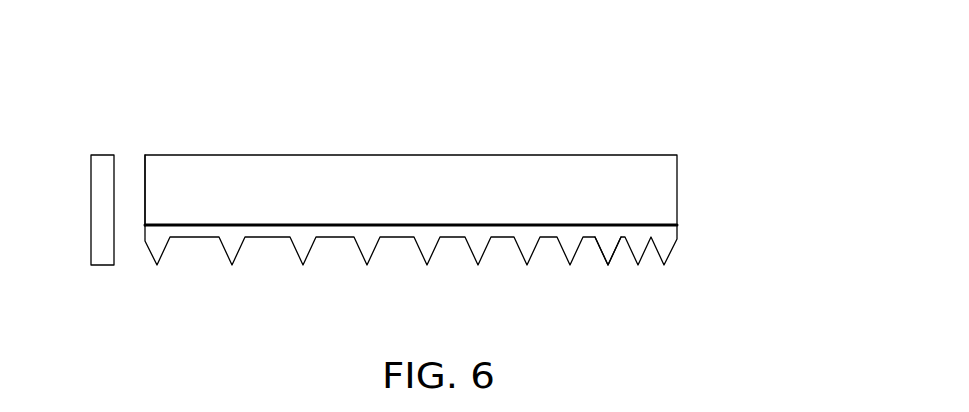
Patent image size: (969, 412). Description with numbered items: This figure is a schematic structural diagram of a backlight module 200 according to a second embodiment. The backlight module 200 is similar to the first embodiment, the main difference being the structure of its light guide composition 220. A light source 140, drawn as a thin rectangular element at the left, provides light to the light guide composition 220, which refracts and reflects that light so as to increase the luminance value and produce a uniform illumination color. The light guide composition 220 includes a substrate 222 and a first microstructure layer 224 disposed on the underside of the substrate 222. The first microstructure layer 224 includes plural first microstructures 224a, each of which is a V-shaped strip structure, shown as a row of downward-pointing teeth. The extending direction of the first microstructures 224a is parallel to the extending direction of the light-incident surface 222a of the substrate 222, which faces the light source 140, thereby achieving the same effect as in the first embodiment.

The backlight module 200 is at (62, 40).
The light source 140 is at (98, 207).
The light guide composition 220 is at (477, 208).
The substrate 222 is at (658, 190).
The light-incident surface 222a is at (145, 188).
The first microstructure layer 224 is at (667, 247).
The first microstructures 224a is at (607, 248).